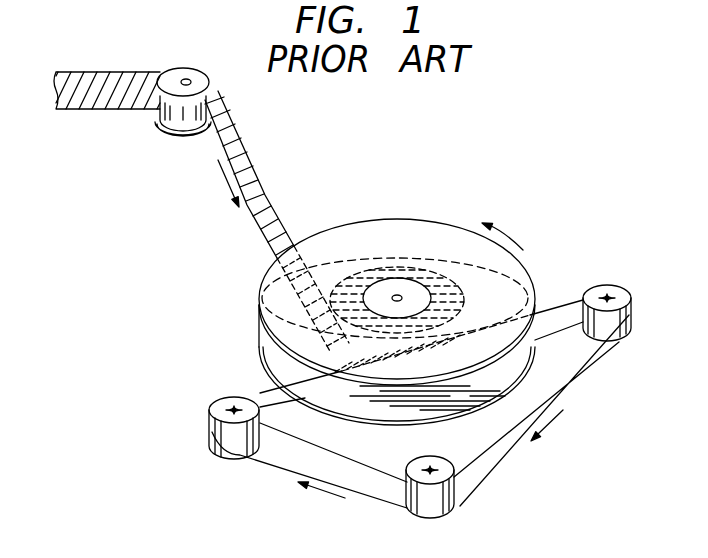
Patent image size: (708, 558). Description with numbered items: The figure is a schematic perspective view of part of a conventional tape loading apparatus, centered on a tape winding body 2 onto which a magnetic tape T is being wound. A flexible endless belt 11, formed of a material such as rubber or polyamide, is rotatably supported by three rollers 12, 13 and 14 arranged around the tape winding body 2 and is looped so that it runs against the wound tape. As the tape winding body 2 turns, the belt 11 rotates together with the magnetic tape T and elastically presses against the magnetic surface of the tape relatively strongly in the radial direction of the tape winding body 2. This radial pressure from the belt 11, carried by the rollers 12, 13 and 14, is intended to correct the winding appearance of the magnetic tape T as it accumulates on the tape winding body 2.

The tape winding body 2 is at (421, 226).
The magnetic tape T is at (252, 182).
The flexible endless belt 11 is at (260, 391).
The roller 12 is at (214, 400).
The roller 13 is at (614, 284).
The roller 14 is at (447, 469).